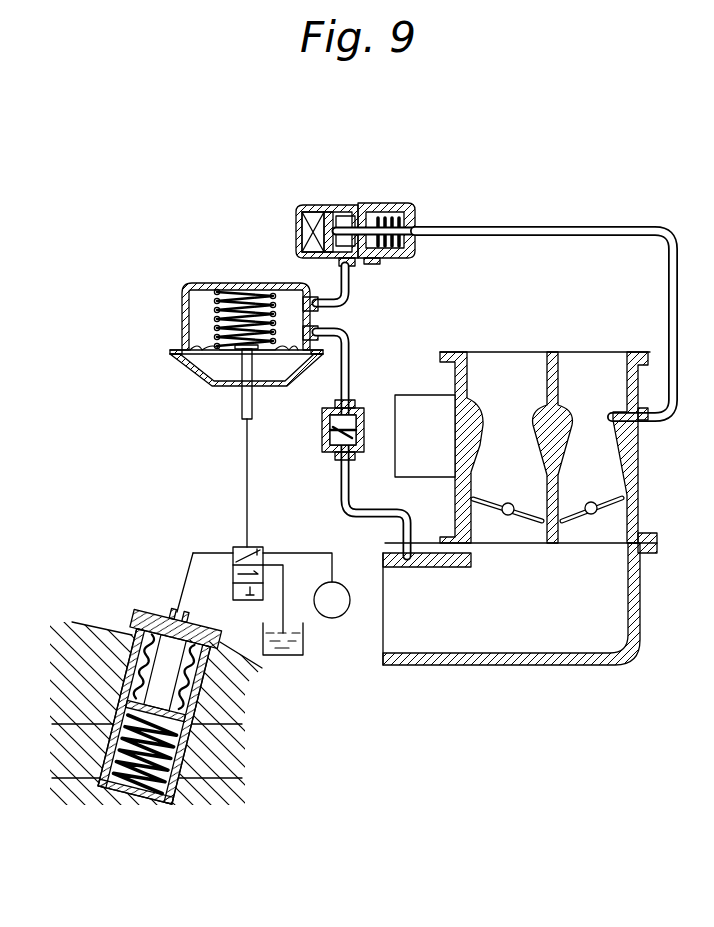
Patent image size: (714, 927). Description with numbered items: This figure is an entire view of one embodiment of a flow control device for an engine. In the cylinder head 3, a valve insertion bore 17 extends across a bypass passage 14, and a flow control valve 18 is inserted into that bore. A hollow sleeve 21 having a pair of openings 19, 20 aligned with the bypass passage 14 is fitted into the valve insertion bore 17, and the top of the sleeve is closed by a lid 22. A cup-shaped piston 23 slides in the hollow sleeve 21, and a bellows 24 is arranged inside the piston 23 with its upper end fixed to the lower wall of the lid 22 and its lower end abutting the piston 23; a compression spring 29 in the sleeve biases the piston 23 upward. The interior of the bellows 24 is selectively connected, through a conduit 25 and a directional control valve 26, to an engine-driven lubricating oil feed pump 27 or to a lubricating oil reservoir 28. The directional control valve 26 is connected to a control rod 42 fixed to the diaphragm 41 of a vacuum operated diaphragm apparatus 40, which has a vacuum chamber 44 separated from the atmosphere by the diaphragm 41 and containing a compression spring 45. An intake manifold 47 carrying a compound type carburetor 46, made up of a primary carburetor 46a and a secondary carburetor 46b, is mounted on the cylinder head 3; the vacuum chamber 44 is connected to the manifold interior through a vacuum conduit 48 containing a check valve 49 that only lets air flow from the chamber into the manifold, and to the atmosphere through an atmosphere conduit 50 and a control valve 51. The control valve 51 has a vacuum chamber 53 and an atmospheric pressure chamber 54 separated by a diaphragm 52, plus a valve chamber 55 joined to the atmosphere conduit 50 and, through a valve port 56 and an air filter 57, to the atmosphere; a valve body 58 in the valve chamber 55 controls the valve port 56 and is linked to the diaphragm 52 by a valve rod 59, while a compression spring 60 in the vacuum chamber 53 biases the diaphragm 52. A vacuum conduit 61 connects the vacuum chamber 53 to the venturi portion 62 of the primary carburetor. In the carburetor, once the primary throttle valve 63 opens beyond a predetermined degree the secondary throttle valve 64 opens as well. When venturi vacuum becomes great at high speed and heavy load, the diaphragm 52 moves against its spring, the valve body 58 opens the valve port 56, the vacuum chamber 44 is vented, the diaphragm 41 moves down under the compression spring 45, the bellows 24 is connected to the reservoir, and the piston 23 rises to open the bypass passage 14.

The cylinder head 3 is at (160, 701).
The bypass passage 14 is at (220, 777).
The valve insertion bore 17 is at (102, 736).
The flow control valve 18 is at (176, 714).
The opening 19 is at (86, 777).
The opening 20 is at (160, 751).
The hollow sleeve 21 is at (132, 697).
The lid 22 is at (181, 607).
The piston 23 is at (202, 750).
The bellows 24 is at (220, 675).
The conduit 25 is at (194, 551).
The directional control valve 26 is at (271, 527).
The lubricating oil feed pump 27 is at (340, 616).
The lubricating oil reservoir 28 is at (300, 657).
The compression spring 29 is at (120, 828).
The vacuum operated diaphragm apparatus 40 is at (223, 390).
The diaphragm 41 is at (192, 340).
The control rod 42 is at (240, 409).
The vacuum chamber 44 is at (271, 292).
The compression spring 45 is at (220, 291).
The compound type carburetor 46 is at (520, 501).
The primary carburetor 46a is at (616, 343).
The secondary carburetor 46b is at (525, 343).
The intake manifold 47 is at (498, 664).
The vacuum conduit 48 is at (350, 360).
The check valve 49 is at (368, 411).
The atmosphere conduit 50 is at (352, 306).
The control valve 51 is at (353, 214).
The diaphragm 52 is at (394, 205).
The vacuum chamber 53 is at (415, 224).
The atmospheric pressure chamber 54 is at (376, 205).
The valve chamber 55 is at (348, 211).
The valve port 56 is at (305, 205).
The air filter 57 is at (302, 231).
The valve body 58 is at (342, 263).
The valve rod 59 is at (372, 264).
The compression spring 60 is at (408, 252).
The vacuum conduit 61 is at (552, 224).
The venturi portion 62 is at (587, 402).
The primary throttle valve 63 is at (600, 499).
The secondary throttle valve 64 is at (518, 499).